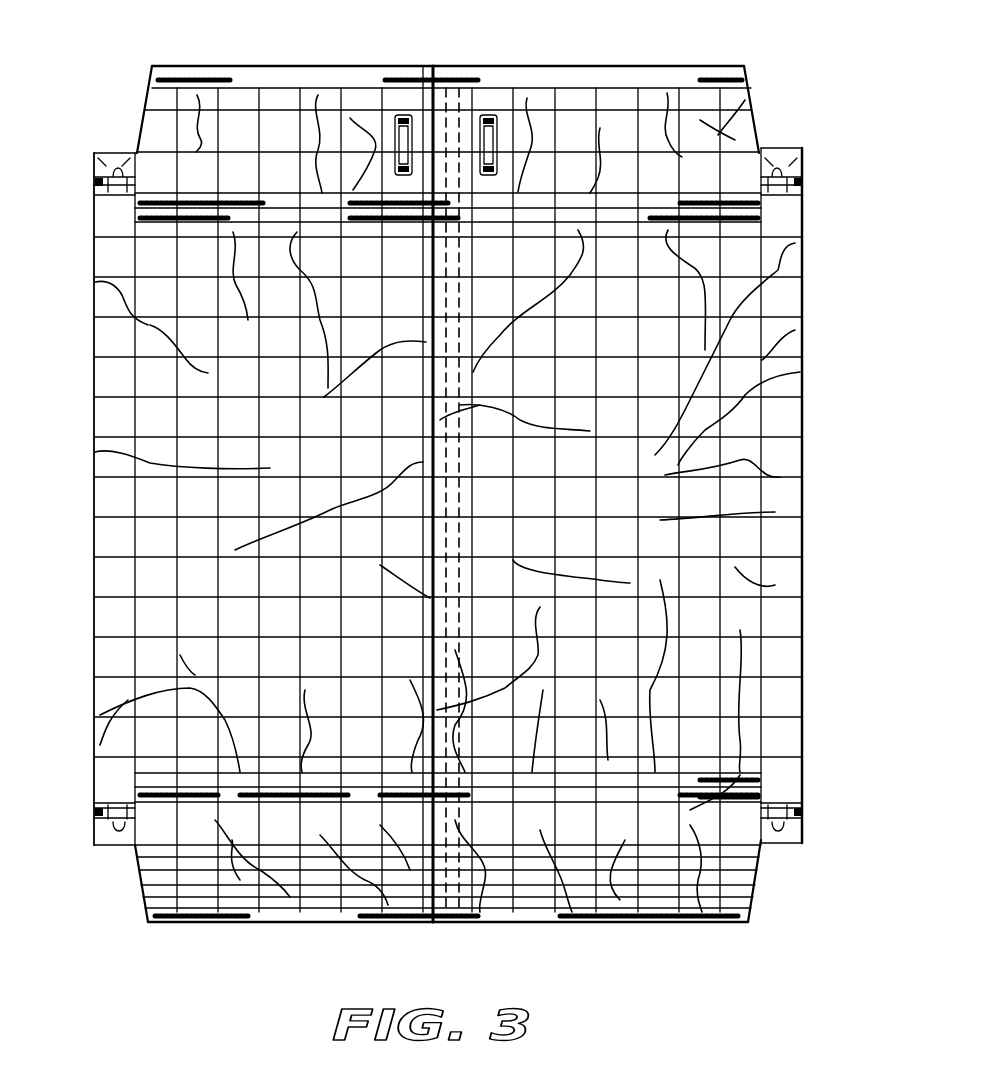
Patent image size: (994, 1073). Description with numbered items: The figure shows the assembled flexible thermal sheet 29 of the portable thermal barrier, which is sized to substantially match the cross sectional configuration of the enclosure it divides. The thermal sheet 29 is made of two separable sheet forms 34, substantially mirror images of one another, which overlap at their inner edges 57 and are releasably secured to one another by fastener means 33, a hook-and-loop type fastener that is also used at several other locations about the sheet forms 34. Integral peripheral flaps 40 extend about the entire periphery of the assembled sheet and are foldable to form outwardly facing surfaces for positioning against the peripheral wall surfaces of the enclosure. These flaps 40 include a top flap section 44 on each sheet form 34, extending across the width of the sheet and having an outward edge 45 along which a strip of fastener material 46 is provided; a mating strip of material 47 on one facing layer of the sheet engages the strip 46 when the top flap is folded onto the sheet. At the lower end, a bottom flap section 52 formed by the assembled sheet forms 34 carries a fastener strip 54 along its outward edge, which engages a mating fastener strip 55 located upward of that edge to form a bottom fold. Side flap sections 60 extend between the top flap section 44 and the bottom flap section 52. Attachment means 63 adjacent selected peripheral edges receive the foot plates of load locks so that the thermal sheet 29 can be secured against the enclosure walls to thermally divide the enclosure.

The flexible thermal sheet 29 is at (360, 930).
The fastener means 33 is at (285, 88).
The separable sheet forms 34 is at (421, 930).
The integral peripheral flaps 40 is at (572, 84).
The top flap section 44 is at (443, 70).
The outward edge 45 is at (257, 66).
The strip of fastener material 46 is at (498, 72).
The mating strip of material 47 is at (443, 222).
The bottom flap section 52 is at (162, 892).
The fastener strip 54 is at (667, 922).
The mating fastener strip 55 is at (760, 773).
The inner edge 57 is at (427, 430).
The side flap sections 60 is at (775, 543).
The attachment means 63 is at (110, 145).